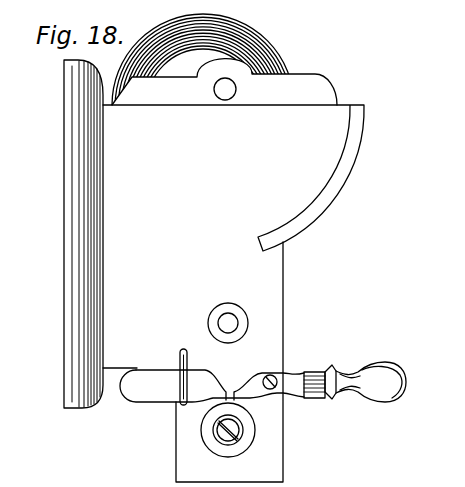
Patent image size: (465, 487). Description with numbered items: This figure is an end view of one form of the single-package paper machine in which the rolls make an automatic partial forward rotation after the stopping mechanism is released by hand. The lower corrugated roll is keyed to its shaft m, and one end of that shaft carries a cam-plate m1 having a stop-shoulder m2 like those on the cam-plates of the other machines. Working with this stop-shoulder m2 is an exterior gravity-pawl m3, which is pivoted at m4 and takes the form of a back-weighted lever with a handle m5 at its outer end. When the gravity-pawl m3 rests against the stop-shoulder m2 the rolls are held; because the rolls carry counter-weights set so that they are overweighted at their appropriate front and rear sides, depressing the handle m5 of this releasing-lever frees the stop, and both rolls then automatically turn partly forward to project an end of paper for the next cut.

The shaft m is at (222, 437).
The cam-plate m1 is at (251, 421).
The stop-shoulder m2 is at (216, 398).
The gravity-pawl m3 is at (199, 377).
The pivot m4 is at (269, 377).
The handle m5 is at (355, 382).